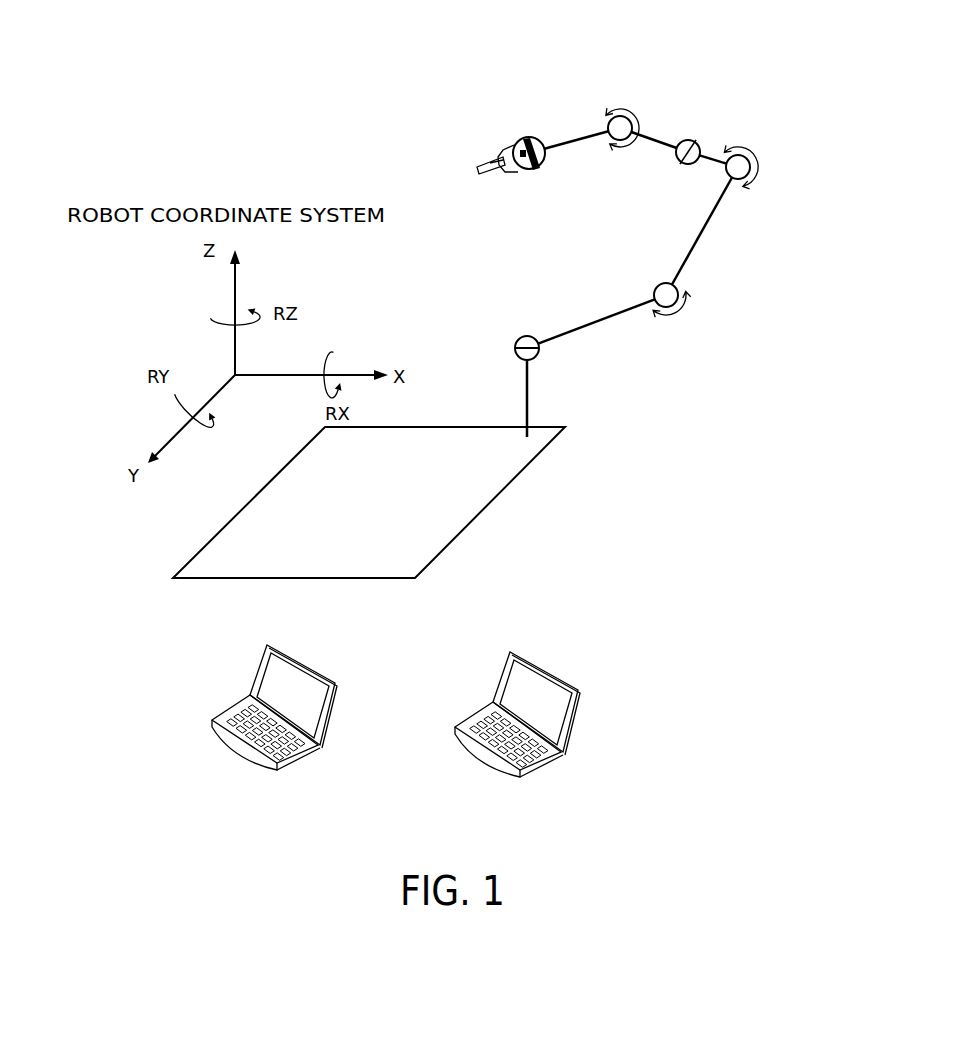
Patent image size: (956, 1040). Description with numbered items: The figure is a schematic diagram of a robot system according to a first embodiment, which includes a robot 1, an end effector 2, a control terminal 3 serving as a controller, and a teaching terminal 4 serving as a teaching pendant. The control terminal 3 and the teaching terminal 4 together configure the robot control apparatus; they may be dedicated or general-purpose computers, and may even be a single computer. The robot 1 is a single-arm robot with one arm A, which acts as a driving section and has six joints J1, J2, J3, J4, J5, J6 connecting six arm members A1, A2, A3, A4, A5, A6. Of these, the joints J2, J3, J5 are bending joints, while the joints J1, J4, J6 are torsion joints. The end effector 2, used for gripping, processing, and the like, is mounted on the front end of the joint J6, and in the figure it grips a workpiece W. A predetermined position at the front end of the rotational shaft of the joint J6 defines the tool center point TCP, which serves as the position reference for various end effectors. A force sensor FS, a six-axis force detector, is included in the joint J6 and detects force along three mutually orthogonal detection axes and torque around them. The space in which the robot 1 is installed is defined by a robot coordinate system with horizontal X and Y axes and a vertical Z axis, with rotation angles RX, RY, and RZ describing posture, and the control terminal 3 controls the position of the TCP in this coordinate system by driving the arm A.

The robot 1 is at (470, 15).
The arm A is at (725, 65).
The arm member A1 is at (530, 395).
The arm member A2 is at (605, 323).
The arm member A3 is at (705, 237).
The arm member A4 is at (716, 146).
The arm member A5 is at (648, 135).
The arm member A6 is at (548, 145).
The joint J1 is at (540, 357).
The joint J2 is at (687, 303).
The joint J3 is at (752, 173).
The joint J4 is at (695, 140).
The joint J5 is at (603, 113).
The joint J6 is at (525, 137).
The force sensor FS is at (540, 160).
The tool center point TCP is at (522, 152).
The workpiece W is at (482, 170).
The end effector 2 is at (523, 172).
The control terminal 3 is at (318, 743).
The teaching terminal 4 is at (561, 750).